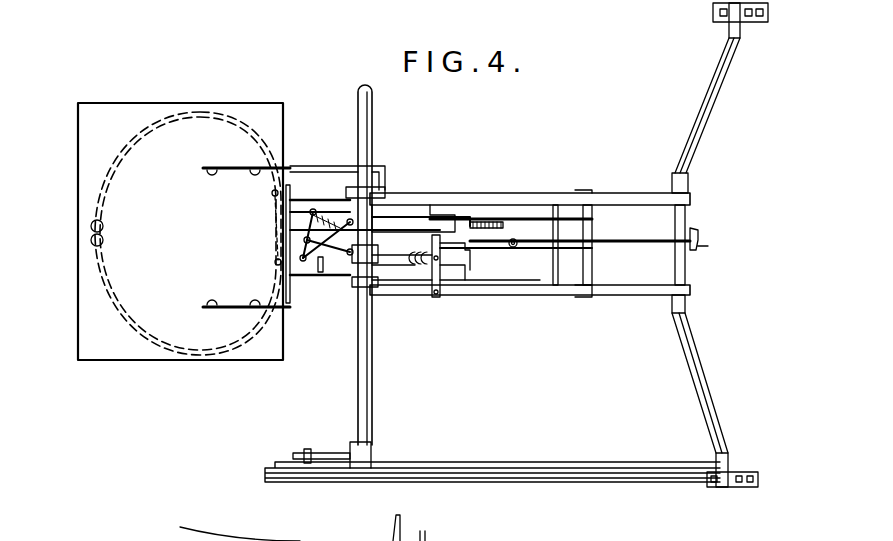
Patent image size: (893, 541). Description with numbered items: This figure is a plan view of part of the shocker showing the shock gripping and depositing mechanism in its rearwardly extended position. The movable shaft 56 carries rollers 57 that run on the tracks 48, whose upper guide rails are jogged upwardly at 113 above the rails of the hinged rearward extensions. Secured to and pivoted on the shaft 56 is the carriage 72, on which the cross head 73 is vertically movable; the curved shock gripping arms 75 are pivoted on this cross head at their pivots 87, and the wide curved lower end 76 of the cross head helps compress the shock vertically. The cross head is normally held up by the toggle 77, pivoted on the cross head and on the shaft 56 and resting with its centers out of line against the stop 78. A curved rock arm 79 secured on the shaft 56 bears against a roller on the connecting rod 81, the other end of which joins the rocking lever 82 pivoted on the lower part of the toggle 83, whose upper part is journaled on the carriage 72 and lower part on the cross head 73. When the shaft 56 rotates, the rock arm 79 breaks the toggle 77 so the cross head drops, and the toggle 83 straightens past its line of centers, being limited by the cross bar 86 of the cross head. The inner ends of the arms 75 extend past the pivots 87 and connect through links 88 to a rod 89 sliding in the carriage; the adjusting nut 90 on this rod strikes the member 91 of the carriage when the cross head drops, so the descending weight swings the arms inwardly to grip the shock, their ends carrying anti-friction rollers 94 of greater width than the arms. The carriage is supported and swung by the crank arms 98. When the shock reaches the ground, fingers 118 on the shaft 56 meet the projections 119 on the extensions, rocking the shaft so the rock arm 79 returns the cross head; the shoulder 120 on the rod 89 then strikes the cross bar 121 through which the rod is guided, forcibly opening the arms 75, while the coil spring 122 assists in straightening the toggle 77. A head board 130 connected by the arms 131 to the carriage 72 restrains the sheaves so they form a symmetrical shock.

The tracks 48 is at (560, 480).
The movable shaft 56 is at (372, 380).
The rollers 57 is at (388, 465).
The carriage 72 is at (560, 295).
The cross head 73 is at (442, 262).
The shock gripping arms 75 is at (135, 322).
The lower end of the cross head 76 is at (278, 257).
The toggle 77 is at (395, 272).
The stop 78 is at (321, 272).
The curved rock arm 79 is at (500, 220).
The connecting rod 81 is at (325, 205).
The rocking lever 82 is at (306, 200).
The toggle 83 is at (525, 238).
The cross bar 86 is at (470, 222).
The pivots 87 is at (268, 195).
The links 88 is at (398, 232).
The rod 89 is at (600, 240).
The adjusting nut 90 is at (698, 235).
The member of the carriage 91 is at (688, 276).
The anti-friction rollers 94 is at (91, 241).
The crank arms 98 is at (695, 155).
The upward jog of the upper guide rails 113 is at (306, 528).
The fingers 118 is at (330, 452).
The projections 119 is at (304, 452).
The shoulder 120 is at (516, 248).
The cross bar 121 is at (553, 218).
The coil spring 122 is at (427, 265).
The head board 130 is at (85, 310).
The arms 131 is at (330, 312).